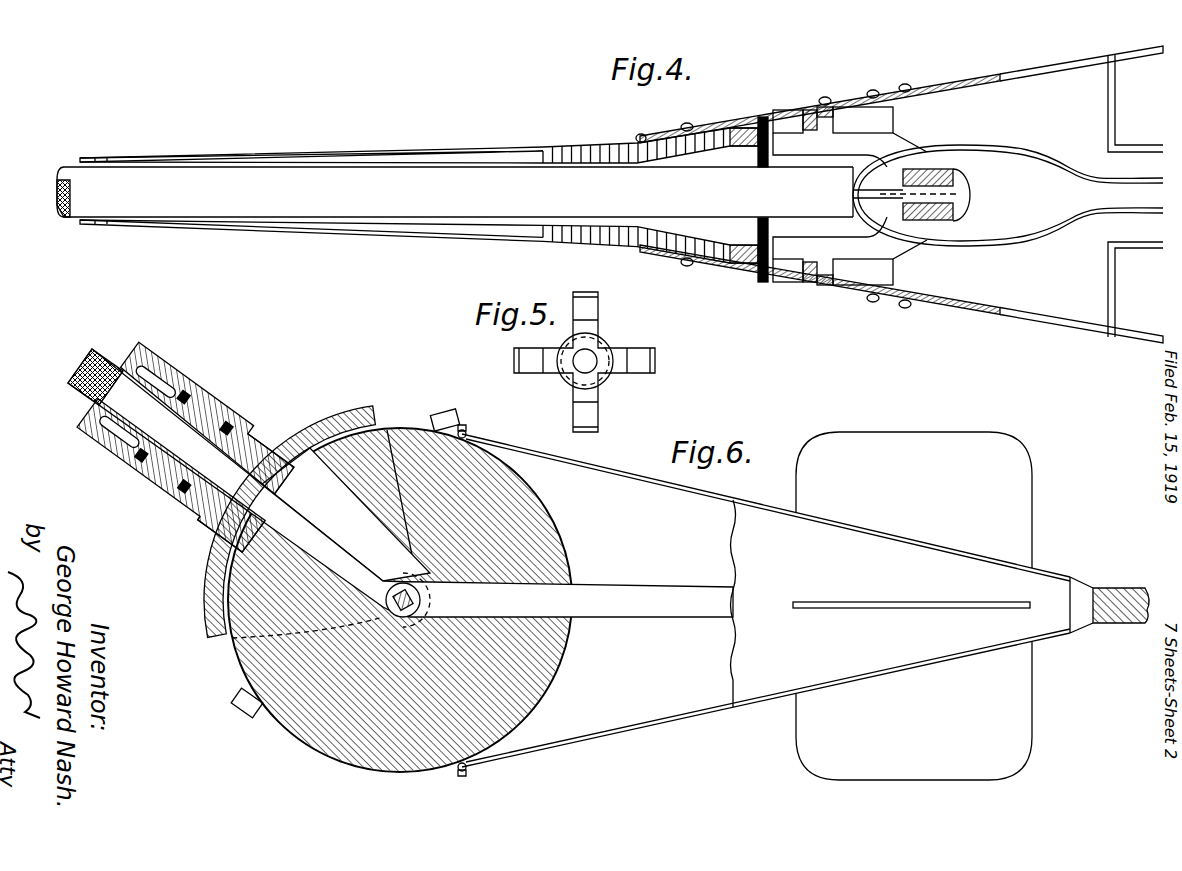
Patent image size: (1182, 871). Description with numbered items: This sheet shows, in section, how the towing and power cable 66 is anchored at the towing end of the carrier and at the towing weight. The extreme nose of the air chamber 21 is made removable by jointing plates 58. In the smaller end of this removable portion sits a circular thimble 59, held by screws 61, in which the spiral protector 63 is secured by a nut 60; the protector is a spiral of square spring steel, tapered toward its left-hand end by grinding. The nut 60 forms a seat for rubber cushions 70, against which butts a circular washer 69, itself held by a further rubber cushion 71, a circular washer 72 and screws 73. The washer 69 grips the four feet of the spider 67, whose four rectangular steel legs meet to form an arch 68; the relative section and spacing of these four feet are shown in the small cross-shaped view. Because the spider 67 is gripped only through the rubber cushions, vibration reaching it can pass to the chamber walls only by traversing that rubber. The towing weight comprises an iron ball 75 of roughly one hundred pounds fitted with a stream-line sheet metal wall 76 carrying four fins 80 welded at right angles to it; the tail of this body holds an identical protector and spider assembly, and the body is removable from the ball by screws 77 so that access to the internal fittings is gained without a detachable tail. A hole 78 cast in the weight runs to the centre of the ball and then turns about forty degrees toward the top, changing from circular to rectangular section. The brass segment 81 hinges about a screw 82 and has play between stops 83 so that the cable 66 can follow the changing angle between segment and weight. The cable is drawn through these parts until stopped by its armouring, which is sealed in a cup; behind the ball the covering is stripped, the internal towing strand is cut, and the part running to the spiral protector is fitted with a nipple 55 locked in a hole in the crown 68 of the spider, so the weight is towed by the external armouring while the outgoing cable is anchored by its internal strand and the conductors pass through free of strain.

In FIG. 4, the air chamber 21 is at (1130, 98).
In FIG. 4, the nipple 55 is at (968, 185).
In FIG. 4, the jointing plates 58 is at (917, 96).
In FIG. 4, the circular thimble 59 is at (640, 139).
In FIG. 4, the nut 60 is at (739, 127).
In FIG. 4, the screws 61 is at (687, 125).
In FIG. 4, the spiral protector 63 is at (468, 156).
In FIG. 6, the spiral protector 63 is at (1104, 588).
In FIG. 4, the cable 66 is at (193, 205).
In FIG. 6, the cable 66 is at (622, 586).
In FIG. 4, the spider 67 is at (898, 145).
In FIG. 5, the spider 67 is at (633, 357).
In FIG. 4, the arch of the spider 68 is at (928, 172).
In FIG. 4, the circular washer 69 is at (810, 111).
In FIG. 4, the rubber cushions 70 is at (768, 118).
In FIG. 4, the rubber cushion 71 is at (806, 121).
In FIG. 4, the circular washer 72 is at (820, 123).
In FIG. 4, the screws 73 is at (827, 100).
In FIG. 6, the iron ball 75 is at (300, 728).
In FIG. 6, the stream-line sheet metal wall 76 is at (598, 467).
In FIG. 6, the screws 77 is at (465, 432).
In FIG. 6, the circular hole 78 is at (400, 483).
In FIG. 6, the fins 80 is at (1021, 602).
In FIG. 6, the brass segment 81 is at (341, 410).
In FIG. 6, the screw 82 is at (388, 586).
In FIG. 6, the stops 83 is at (441, 410).